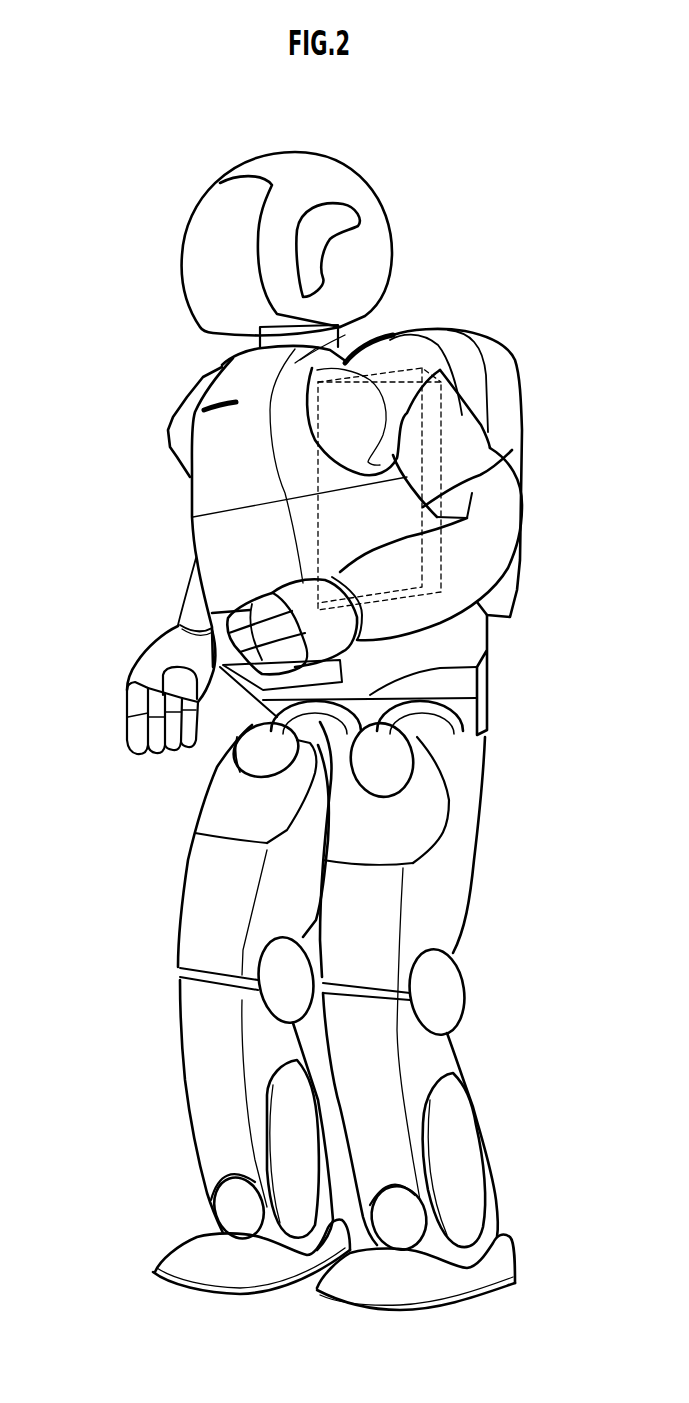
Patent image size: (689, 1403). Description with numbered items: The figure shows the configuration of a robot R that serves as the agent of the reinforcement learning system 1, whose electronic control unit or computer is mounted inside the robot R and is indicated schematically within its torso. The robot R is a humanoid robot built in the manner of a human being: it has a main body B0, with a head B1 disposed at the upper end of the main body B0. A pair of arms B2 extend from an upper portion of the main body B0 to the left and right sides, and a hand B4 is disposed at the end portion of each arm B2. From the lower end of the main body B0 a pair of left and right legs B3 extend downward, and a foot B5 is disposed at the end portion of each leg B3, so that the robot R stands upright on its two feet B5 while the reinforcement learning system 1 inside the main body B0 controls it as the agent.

The robot R is at (133, 148).
The head B1 is at (373, 171).
The main body B0 is at (345, 335).
The reinforcement learning system 1 is at (440, 445).
The arm B2 is at (176, 559).
The hand B4 is at (116, 676).
The leg B3 is at (169, 857).
The foot B5 is at (192, 1217).